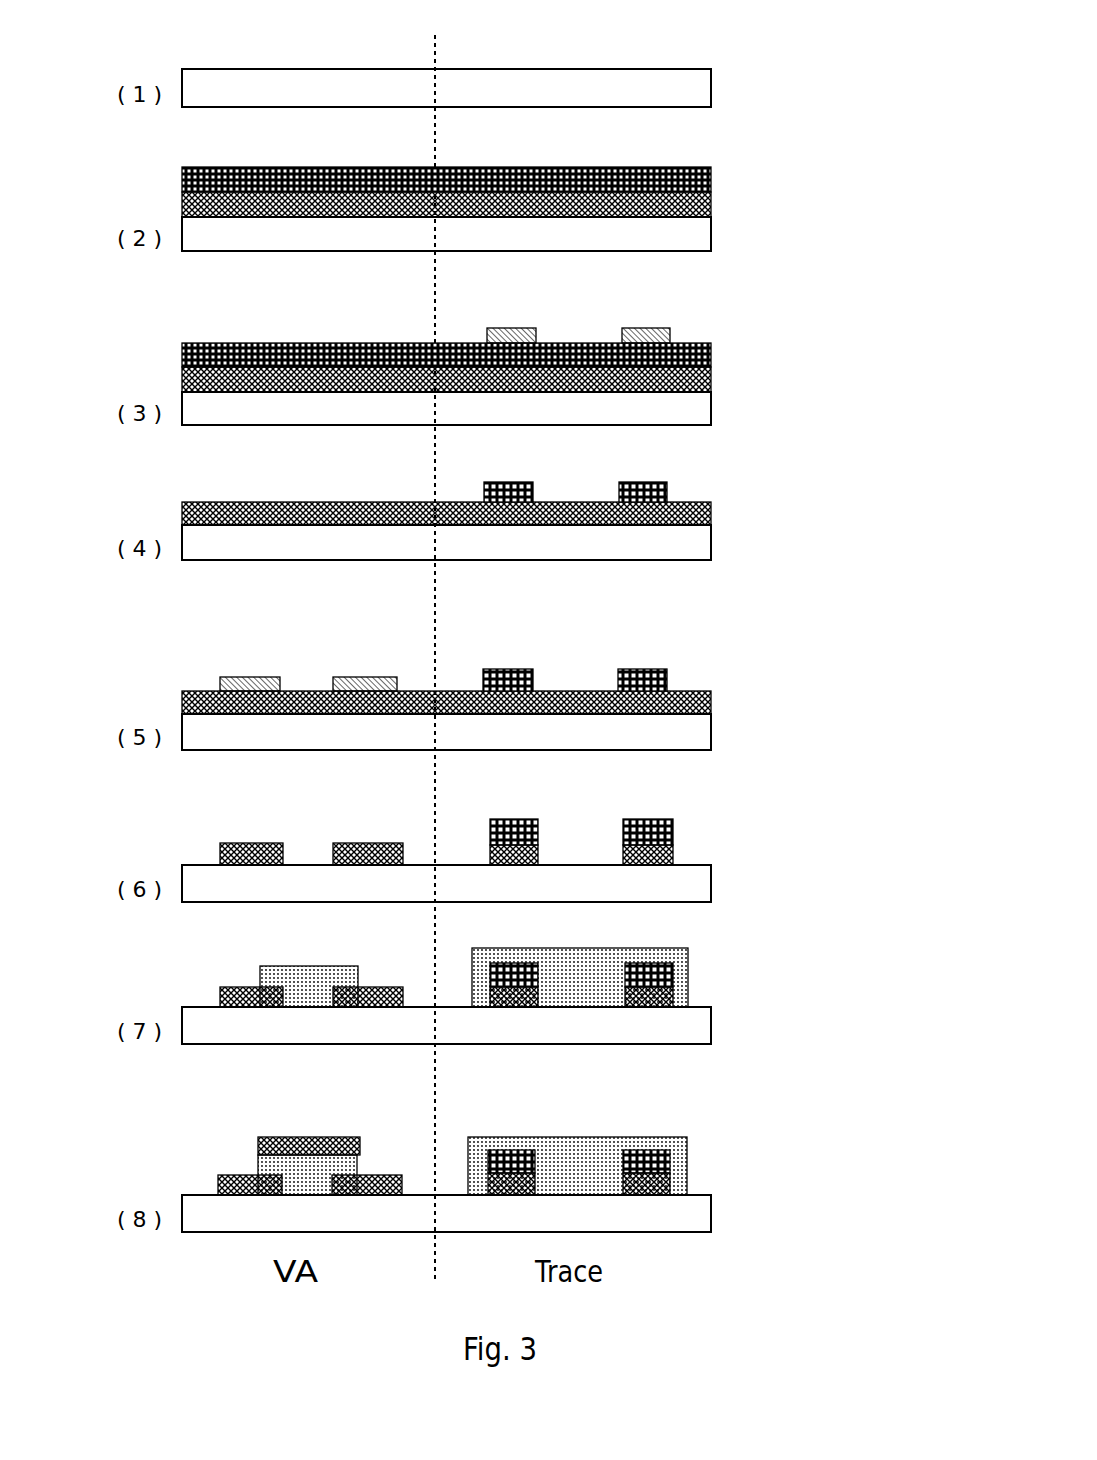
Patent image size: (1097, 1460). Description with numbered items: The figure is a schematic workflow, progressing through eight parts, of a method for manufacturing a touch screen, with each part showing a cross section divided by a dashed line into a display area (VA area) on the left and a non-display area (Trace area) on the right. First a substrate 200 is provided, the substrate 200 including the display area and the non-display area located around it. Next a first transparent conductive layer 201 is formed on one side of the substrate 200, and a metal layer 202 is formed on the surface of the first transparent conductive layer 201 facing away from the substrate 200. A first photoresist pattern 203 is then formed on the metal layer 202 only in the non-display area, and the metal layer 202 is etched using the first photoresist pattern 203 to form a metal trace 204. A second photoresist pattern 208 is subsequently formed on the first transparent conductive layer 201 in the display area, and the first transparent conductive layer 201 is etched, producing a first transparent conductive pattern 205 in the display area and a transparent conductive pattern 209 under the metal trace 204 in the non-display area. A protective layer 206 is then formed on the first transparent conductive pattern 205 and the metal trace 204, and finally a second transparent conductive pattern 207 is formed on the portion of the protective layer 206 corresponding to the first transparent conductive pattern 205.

The substrate 200 is at (561, 63).
The first transparent conductive layer 201 is at (561, 186).
The metal layer 202 is at (561, 152).
The first photoresist pattern 203 is at (687, 309).
The metal trace 204 is at (682, 468).
The first transparent conductive pattern 205 is at (230, 838).
The protective layer 206 is at (683, 952).
The second transparent conductive pattern 207 is at (221, 1130).
The second photoresist pattern 208 is at (227, 666).
The transparent conductive pattern 209 is at (687, 840).